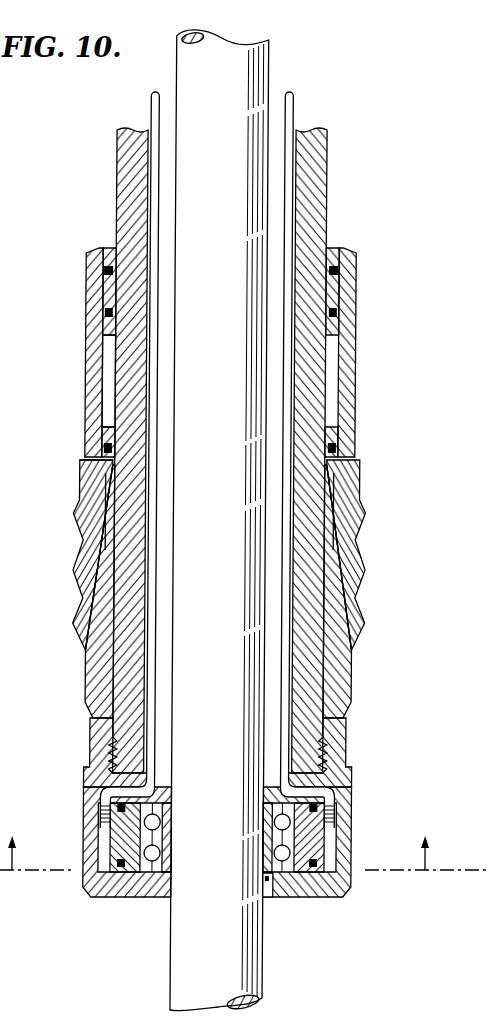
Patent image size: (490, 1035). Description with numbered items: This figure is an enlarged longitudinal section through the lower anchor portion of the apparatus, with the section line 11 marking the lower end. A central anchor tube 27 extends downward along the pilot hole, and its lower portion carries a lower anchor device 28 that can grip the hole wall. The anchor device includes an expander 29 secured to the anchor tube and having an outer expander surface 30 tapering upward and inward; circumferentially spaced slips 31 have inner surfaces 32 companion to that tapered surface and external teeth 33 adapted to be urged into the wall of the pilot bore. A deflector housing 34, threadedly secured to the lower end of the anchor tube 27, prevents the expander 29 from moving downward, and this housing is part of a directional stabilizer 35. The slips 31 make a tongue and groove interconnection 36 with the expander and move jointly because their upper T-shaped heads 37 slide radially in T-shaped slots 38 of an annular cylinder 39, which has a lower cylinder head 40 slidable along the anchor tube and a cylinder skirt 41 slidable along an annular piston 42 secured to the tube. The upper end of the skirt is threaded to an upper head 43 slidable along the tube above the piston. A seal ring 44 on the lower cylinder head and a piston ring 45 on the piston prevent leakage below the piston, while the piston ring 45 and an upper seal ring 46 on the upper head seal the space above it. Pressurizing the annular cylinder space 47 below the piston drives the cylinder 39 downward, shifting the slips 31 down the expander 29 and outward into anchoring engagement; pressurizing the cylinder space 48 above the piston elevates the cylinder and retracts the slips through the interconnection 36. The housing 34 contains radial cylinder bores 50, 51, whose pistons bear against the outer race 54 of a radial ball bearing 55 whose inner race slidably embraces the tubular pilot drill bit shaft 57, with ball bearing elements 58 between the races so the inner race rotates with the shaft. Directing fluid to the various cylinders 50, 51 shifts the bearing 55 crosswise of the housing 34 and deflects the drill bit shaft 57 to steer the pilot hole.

The section line 11- 11 is at (243, 873).
The central anchor tube 27 is at (320, 169).
The lower anchor device 28 is at (371, 555).
The expander 29 is at (358, 700).
The outer expander surface 30 is at (348, 612).
The slips 31 is at (351, 548).
The inner surfaces 32 is at (94, 627).
The external teeth 33 is at (87, 547).
The deflector housing 34 is at (354, 784).
The directional stabilizer 35 is at (128, 893).
The tongue and groove interconnection 36 is at (166, 868).
The upper T-shaped heads 37 is at (85, 475).
The T-shaped slots 38 is at (108, 470).
The annular cylinder 39 is at (73, 351).
The lower cylinder head 40 is at (108, 438).
The cylinder skirt 41 is at (86, 363).
The annular piston 42 is at (106, 330).
The upper head 43 is at (102, 252).
The seal ring 44 is at (338, 450).
The piston ring 45 is at (337, 318).
The upper seal ring 46 is at (337, 277).
The annular cylinder space 47 is at (335, 411).
The cylinder space 48 is at (106, 294).
The cylinder bore 50 is at (331, 847).
The cylinder bore 51 is at (108, 830).
The outer race 54 is at (296, 867).
The radial ball bearing 55 is at (280, 886).
The tubular pilot drill bit shaft 57 is at (219, 520).
The ball bearing elements 58 is at (167, 852).